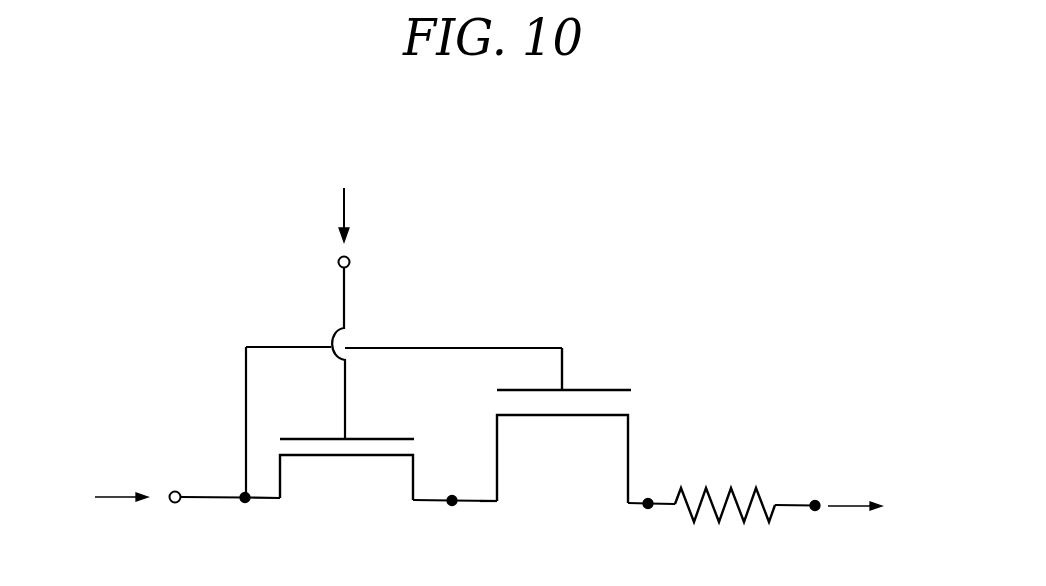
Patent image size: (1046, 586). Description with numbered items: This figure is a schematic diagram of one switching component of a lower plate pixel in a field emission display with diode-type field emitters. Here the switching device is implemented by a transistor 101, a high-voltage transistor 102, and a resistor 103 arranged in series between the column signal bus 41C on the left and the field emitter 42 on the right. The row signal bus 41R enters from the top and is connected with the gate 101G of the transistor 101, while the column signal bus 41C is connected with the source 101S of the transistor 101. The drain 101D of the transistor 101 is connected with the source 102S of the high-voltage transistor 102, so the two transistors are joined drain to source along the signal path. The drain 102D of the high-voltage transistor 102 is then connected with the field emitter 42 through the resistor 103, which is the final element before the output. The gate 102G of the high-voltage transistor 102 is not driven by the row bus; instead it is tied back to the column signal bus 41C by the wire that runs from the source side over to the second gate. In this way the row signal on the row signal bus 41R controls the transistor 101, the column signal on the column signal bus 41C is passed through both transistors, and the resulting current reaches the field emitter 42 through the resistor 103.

The row signal bus 41R is at (348, 201).
The column signal bus 41C is at (95, 497).
The field emitter 42 is at (867, 509).
The transistor 101 is at (347, 471).
The gate 101G is at (377, 337).
The source 101S is at (196, 518).
The drain 101D is at (424, 521).
The high-voltage transistor 102 is at (562, 459).
The gate 102G is at (564, 369).
The source 102S is at (490, 523).
The drain 102D is at (648, 527).
The resistor 103 is at (725, 481).